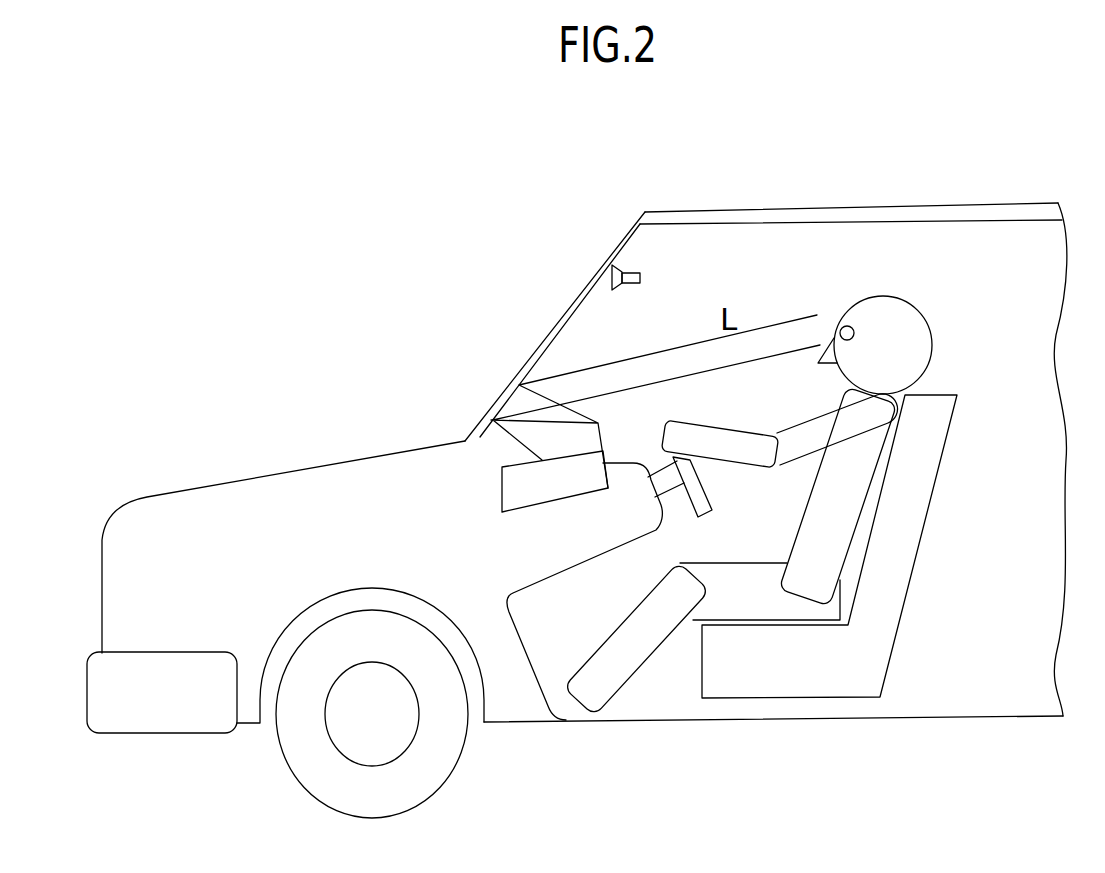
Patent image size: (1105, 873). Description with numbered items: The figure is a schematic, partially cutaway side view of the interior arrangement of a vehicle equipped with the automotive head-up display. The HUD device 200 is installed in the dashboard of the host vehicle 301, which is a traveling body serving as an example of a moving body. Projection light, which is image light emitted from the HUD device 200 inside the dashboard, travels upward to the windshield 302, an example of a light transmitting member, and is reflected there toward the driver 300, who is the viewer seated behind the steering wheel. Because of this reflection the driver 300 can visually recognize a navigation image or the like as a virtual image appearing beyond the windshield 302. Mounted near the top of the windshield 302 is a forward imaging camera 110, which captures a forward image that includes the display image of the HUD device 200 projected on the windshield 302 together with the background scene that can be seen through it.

The forward imaging camera 110 is at (627, 285).
The automotive HUD device 200 is at (528, 507).
The driver 300 is at (932, 337).
The host vehicle 301 is at (962, 718).
The windshield 302 is at (591, 281).